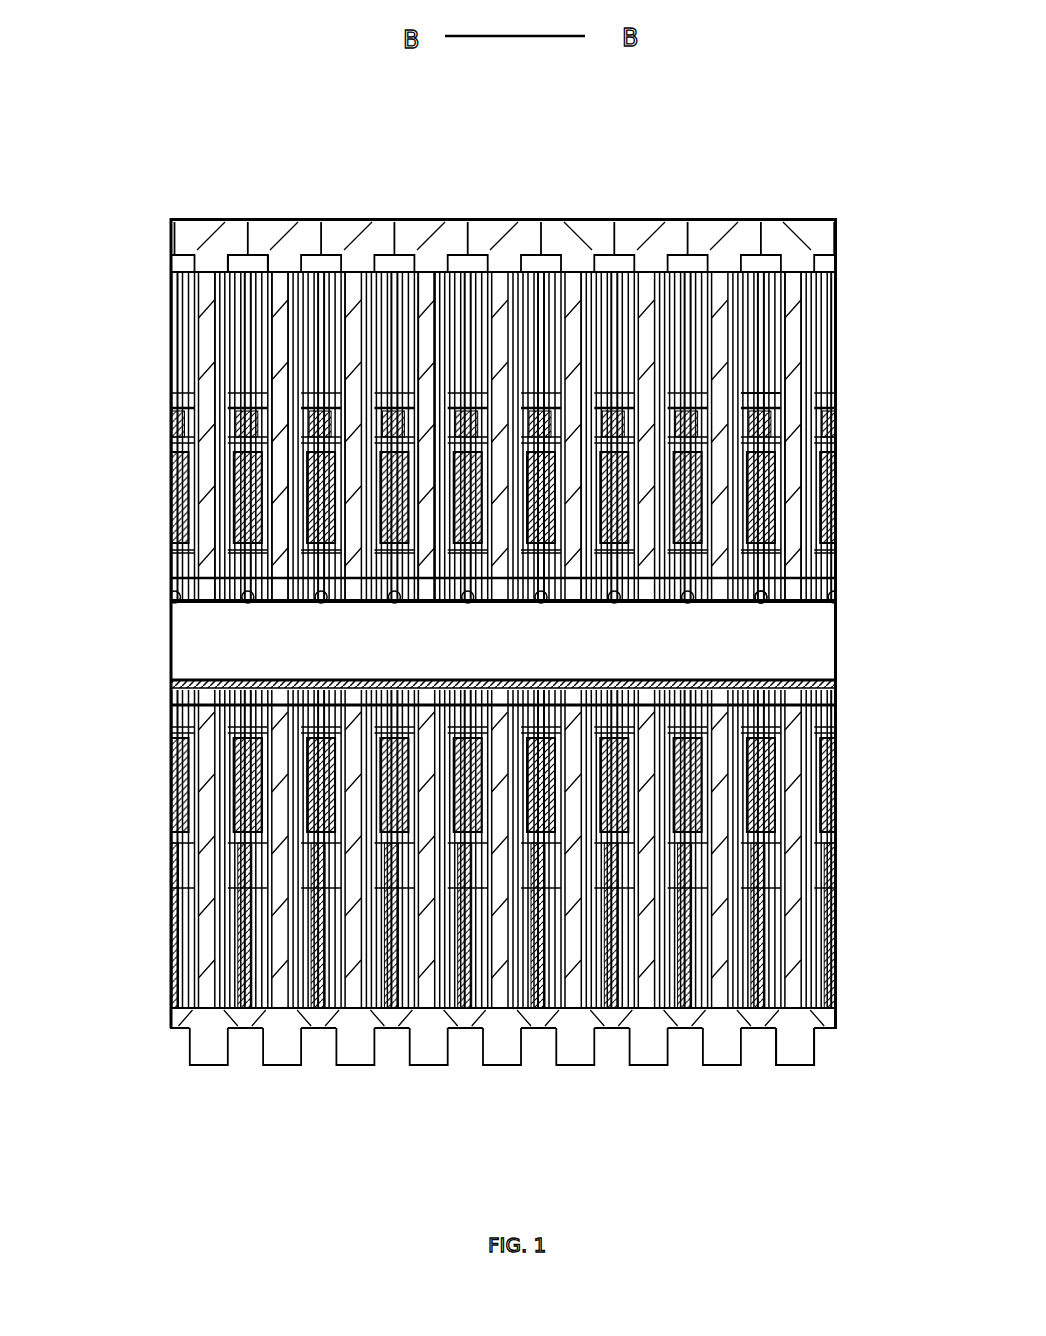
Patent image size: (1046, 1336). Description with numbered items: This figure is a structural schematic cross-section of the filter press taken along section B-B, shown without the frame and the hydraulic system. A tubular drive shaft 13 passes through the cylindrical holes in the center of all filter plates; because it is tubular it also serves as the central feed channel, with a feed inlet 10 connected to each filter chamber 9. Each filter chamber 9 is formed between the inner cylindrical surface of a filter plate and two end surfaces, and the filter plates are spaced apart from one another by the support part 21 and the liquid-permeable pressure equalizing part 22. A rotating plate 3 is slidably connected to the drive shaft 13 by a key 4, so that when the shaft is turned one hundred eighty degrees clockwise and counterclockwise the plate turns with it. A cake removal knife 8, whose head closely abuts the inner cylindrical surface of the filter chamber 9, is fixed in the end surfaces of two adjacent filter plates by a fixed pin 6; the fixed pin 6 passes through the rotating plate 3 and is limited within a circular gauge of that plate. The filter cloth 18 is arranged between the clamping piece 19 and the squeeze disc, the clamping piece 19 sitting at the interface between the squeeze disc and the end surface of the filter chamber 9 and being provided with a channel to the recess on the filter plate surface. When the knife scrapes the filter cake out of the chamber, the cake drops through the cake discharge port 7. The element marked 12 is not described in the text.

The rotating plate 3 is at (325, 1026).
The key 4 is at (833, 923).
The fixed pin 6 is at (787, 458).
The cake discharge port 7 is at (745, 1033).
The cake removal knife 8 is at (762, 395).
The filter chamber 9 is at (228, 772).
The feed inlet 10 is at (787, 598).
The spacer channel 12 is at (427, 300).
The drive shaft 13 is at (586, 685).
The filter cloth 18 is at (262, 308).
The clamping piece 19 is at (298, 300).
The support part 21 is at (383, 300).
The liquid-permeable pressure equalizing part 22 is at (580, 292).